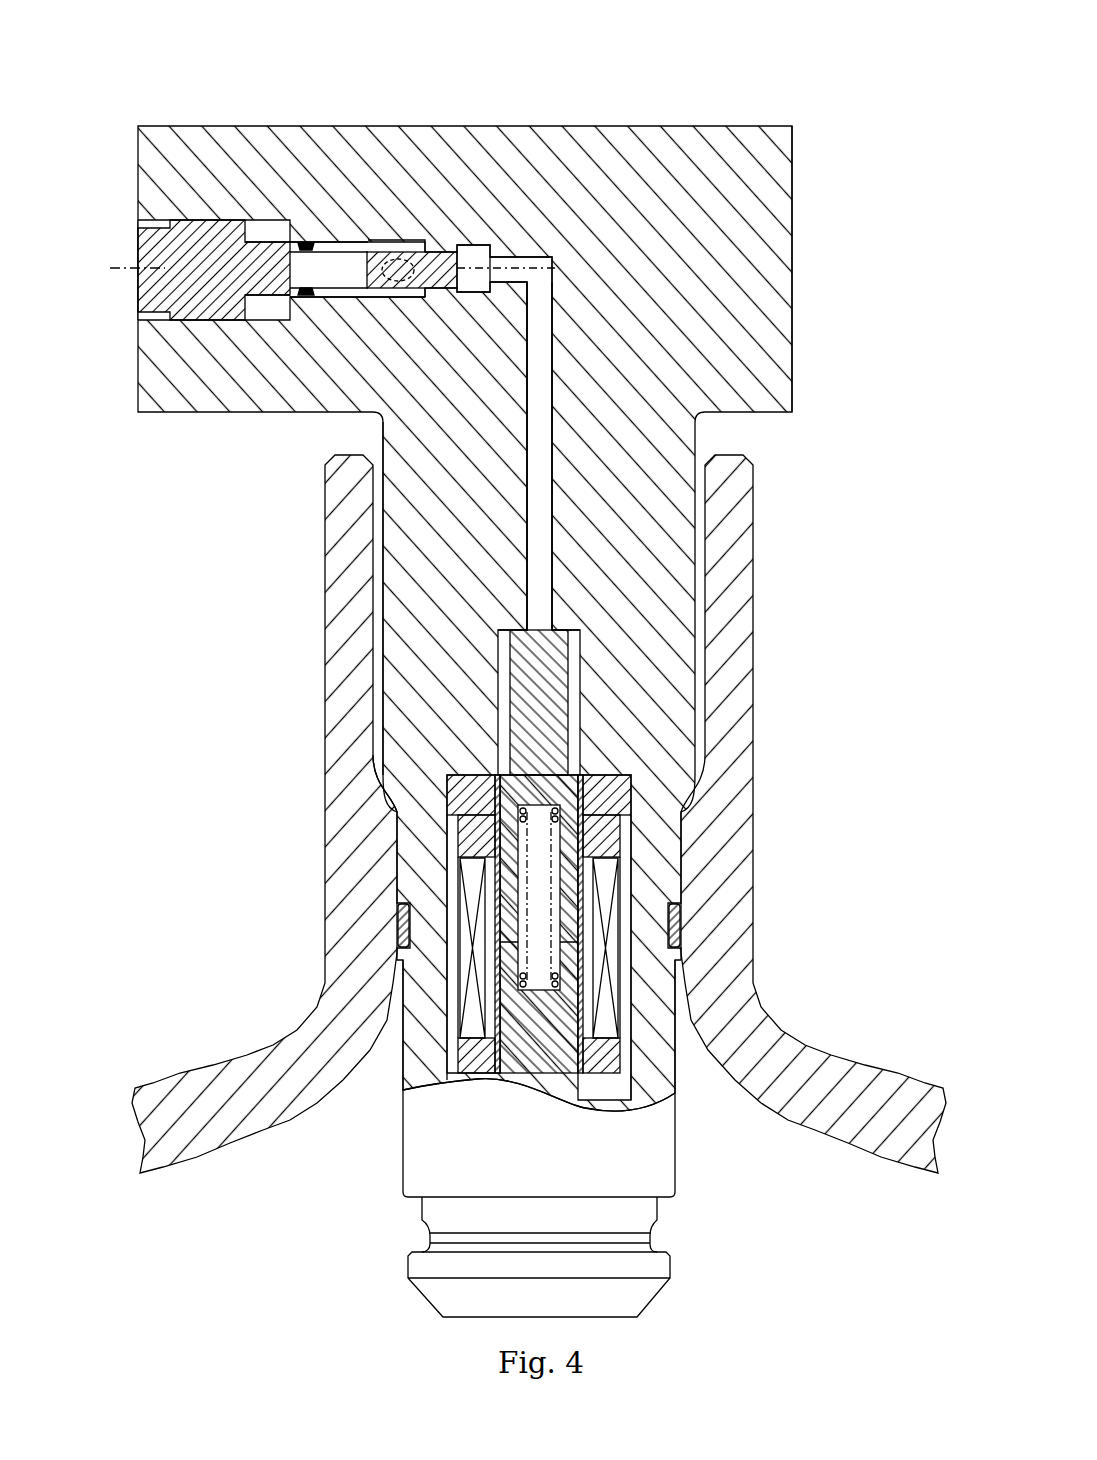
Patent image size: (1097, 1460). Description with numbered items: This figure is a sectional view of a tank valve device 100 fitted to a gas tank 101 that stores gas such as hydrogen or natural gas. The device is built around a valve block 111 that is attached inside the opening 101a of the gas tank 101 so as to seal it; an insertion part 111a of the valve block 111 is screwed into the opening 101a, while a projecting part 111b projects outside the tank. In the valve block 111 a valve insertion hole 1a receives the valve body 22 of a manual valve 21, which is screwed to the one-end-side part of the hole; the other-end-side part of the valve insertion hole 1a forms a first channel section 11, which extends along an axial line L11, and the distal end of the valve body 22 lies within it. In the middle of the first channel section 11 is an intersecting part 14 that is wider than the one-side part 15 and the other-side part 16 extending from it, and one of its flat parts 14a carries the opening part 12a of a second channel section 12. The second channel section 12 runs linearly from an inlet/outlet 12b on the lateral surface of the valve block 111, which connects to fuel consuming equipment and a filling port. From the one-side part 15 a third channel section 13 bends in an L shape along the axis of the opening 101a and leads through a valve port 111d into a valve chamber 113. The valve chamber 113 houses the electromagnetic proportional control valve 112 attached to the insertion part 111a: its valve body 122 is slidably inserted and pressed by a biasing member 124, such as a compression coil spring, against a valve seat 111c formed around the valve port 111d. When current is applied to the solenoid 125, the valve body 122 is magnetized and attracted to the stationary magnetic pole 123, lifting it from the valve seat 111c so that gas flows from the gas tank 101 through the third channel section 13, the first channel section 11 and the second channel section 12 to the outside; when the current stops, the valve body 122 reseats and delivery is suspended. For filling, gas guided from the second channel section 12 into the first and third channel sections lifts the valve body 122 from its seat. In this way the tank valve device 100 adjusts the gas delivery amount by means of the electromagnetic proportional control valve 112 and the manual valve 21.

The tank valve device 100 is at (205, 106).
The valve insertion hole 1a is at (138, 215).
The center axis of flow passage L11 is at (138, 268).
The manual valve 21 is at (146, 300).
The valve body 22 is at (268, 298).
The other-side part 16 is at (308, 246).
The intersecting part 14 is at (402, 252).
The flat part 14a is at (408, 290).
The second channel section 12 is at (359, 497).
The opening part 12a is at (452, 297).
The inlet/outlet 12b is at (432, 250).
The one-side part 15 is at (468, 247).
The first channel section 11 is at (352, 297).
The third channel section 13 is at (552, 500).
The valve block 111 is at (638, 150).
The insertion part 111a is at (383, 600).
The projecting part 111b is at (782, 348).
The valve seat 111c is at (552, 630).
The valve port 111d is at (527, 630).
The gas tank 101 is at (245, 1060).
The opening 101a is at (383, 780).
The electromagnetic proportional control valve 112 is at (386, 1189).
The valve chamber 113 is at (633, 800).
The valve body 122 is at (530, 715).
The stationary magnetic pole 123 is at (540, 1085).
The biasing member 124 is at (563, 988).
The solenoid 125 is at (465, 870).